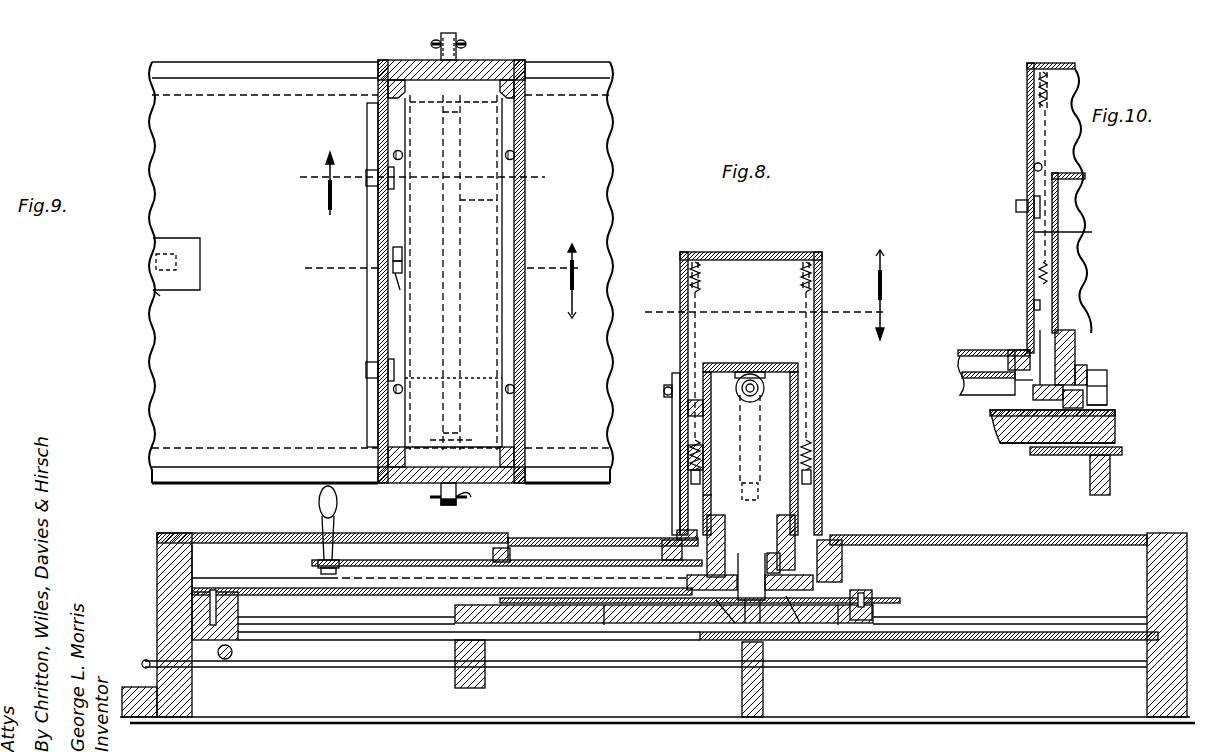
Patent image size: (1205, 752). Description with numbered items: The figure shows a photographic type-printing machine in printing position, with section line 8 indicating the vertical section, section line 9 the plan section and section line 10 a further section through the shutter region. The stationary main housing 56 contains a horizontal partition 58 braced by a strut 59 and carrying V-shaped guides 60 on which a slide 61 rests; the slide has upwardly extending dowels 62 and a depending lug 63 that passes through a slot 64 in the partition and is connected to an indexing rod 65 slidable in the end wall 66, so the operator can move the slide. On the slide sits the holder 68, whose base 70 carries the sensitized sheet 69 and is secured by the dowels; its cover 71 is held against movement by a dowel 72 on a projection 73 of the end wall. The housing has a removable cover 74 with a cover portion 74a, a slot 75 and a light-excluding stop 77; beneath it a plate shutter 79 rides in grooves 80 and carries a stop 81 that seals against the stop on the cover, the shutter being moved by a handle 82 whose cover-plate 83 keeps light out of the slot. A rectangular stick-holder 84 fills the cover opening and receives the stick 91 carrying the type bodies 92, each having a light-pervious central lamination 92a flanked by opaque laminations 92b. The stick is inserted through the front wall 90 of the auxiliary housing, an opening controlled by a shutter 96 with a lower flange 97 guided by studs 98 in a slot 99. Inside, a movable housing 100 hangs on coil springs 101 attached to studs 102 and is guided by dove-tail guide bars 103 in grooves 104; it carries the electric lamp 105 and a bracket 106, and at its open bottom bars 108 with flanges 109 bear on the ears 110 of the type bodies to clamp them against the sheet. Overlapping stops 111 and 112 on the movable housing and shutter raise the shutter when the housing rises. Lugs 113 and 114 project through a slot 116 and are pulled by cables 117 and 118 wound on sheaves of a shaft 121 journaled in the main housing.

In FIG. 9, the section line 8 is at (448, 281).
In FIG. 8, the section line 9 is at (774, 295).
In FIG. 9, the section line 10 is at (413, 183).
In FIG. 8, the main housing 56 is at (1147, 578).
In FIG. 8, the partition 58 is at (986, 642).
In FIG. 10, the partition 58 is at (1055, 456).
In FIG. 8, the strut 59 is at (763, 690).
In FIG. 10, the strut 59 is at (1112, 478).
In FIG. 8, the guides 60 is at (990, 625).
In FIG. 10, the slide 61 is at (1030, 442).
In FIG. 8, the dowels 62 is at (448, 612).
In FIG. 8, the depending lug 63 is at (485, 660).
In FIG. 8, the slot 64 is at (398, 636).
In FIG. 8, the indexing rod 65 is at (150, 662).
In FIG. 8, the end wall 66 is at (157, 567).
In FIG. 8, the holder 68 is at (878, 600).
In FIG. 8, the sheet 69 is at (546, 602).
In FIG. 8, the base 70 is at (838, 610).
In FIG. 8, the cover 71 is at (372, 596).
In FIG. 8, the dowel 72 is at (210, 618).
In FIG. 8, the projection 73 is at (238, 608).
In FIG. 9, the cover 74 is at (228, 68).
In FIG. 8, the cover 74 is at (542, 538).
In FIG. 10, the cover 74 is at (966, 350).
In FIG. 9, the cover plate 74a is at (600, 110).
In FIG. 8, the cover plate 74a is at (972, 535).
In FIG. 9, the slot 75 is at (170, 266).
In FIG. 8, the light-excluding stop 77 is at (664, 552).
In FIG. 10, the light-excluding stop 77 is at (1006, 380).
In FIG. 8, the shutter 79 is at (404, 566).
In FIG. 10, the shutter 79 is at (966, 370).
In FIG. 8, the grooves 80 is at (240, 586).
In FIG. 8, the stop 81 is at (506, 548).
In FIG. 8, the handle 82 is at (324, 506).
In FIG. 9, the cover-plate 83 is at (190, 290).
In FIG. 8, the cover-plate 83 is at (274, 536).
In FIG. 8, the stick-holder 84 is at (690, 582).
In FIG. 10, the stick-holder 84 is at (1004, 420).
In FIG. 9, the front wall 90 is at (380, 122).
In FIG. 8, the front wall 90 is at (751, 252).
In FIG. 10, the front wall 90 is at (1061, 63).
In FIG. 8, the stick 91 is at (718, 600).
In FIG. 10, the stick 91 is at (1082, 396).
In FIG. 8, the type bodies 92 is at (751, 574).
In FIG. 10, the type bodies 92 is at (1096, 376).
In FIG. 10, the central lamination 92a is at (1106, 386).
In FIG. 8, the opaque laminations 92b is at (770, 600).
In FIG. 10, the opaque laminations 92b is at (1092, 408).
In FIG. 8, the shutter 96 is at (703, 496).
In FIG. 10, the shutter 96 is at (1036, 172).
In FIG. 9, the flange 97 is at (368, 324).
In FIG. 8, the flange 97 is at (676, 546).
In FIG. 10, the flange 97 is at (1020, 350).
In FIG. 9, the guide studs 98 is at (368, 181).
In FIG. 8, the guide studs 98 is at (666, 394).
In FIG. 10, the guide studs 98 is at (1016, 206).
In FIG. 10, the slot 99 is at (1035, 232).
In FIG. 9, the movable housing 100 is at (478, 165).
In FIG. 8, the movable housing 100 is at (749, 370).
In FIG. 10, the movable housing 100 is at (1080, 162).
In FIG. 9, the coil springs 101 is at (394, 154).
In FIG. 8, the coil springs 101 is at (804, 286).
In FIG. 10, the coil springs 101 is at (1040, 108).
In FIG. 9, the studs 102 is at (506, 388).
In FIG. 8, the studs 102 is at (691, 480).
In FIG. 10, the studs 102 is at (1034, 308).
In FIG. 9, the guide bars 103 is at (421, 88).
In FIG. 8, the guide bars 103 is at (750, 415).
In FIG. 9, the dove-tail grooves 104 is at (378, 62).
In FIG. 10, the dove-tail grooves 104 is at (1050, 332).
In FIG. 9, the electric lamp 105 is at (497, 200).
In FIG. 8, the electric lamp 105 is at (754, 374).
In FIG. 9, the bracket 106 is at (498, 106).
In FIG. 8, the bracket 106 is at (744, 375).
In FIG. 8, the bars 108 is at (722, 530).
In FIG. 10, the bars 108 is at (1076, 340).
In FIG. 8, the flanges 109 is at (776, 560).
In FIG. 10, the flanges 109 is at (1088, 368).
In FIG. 8, the ears 110 is at (842, 566).
In FIG. 9, the stop 111 is at (404, 292).
In FIG. 8, the stop 111 is at (688, 470).
In FIG. 9, the stop 112 is at (404, 258).
In FIG. 8, the stop 112 is at (700, 410).
In FIG. 9, the lug 113 is at (441, 506).
In FIG. 9, the lug 114 is at (441, 32).
In FIG. 8, the lug 114 is at (738, 439).
In FIG. 8, the slot 116 is at (758, 465).
In FIG. 9, the cable 117 is at (460, 504).
In FIG. 9, the cable 118 is at (463, 48).
In FIG. 8, the shaft 121 is at (225, 660).